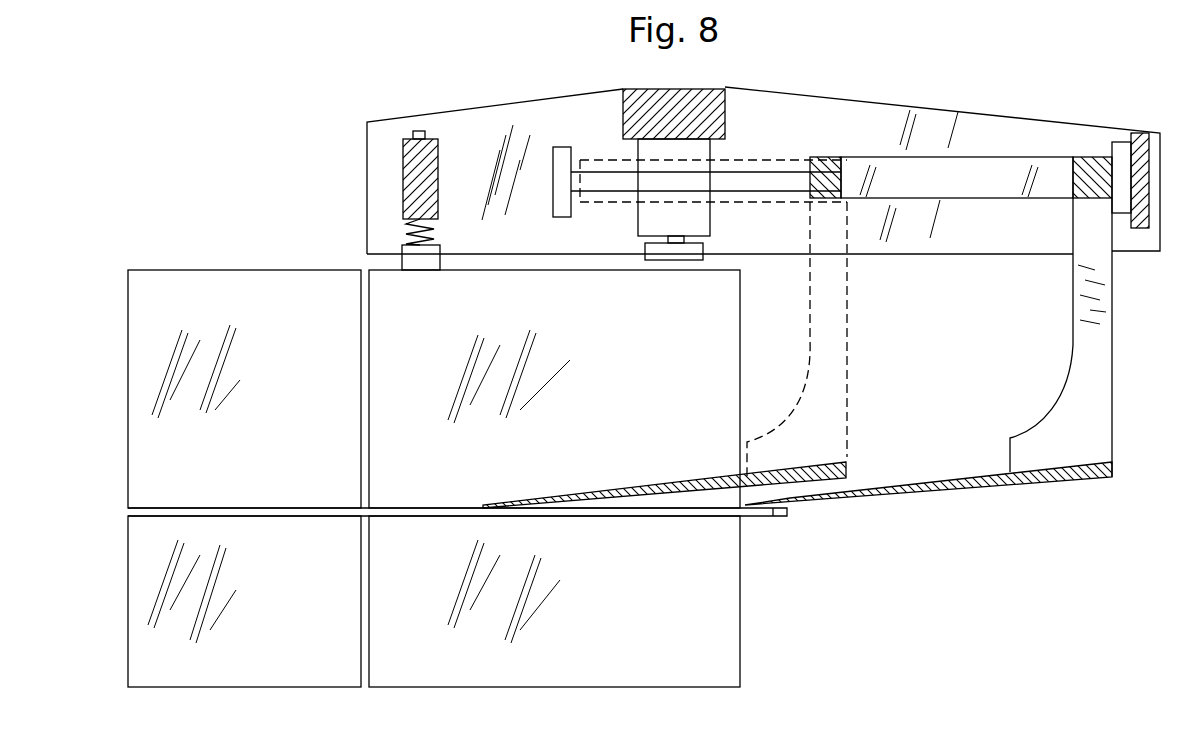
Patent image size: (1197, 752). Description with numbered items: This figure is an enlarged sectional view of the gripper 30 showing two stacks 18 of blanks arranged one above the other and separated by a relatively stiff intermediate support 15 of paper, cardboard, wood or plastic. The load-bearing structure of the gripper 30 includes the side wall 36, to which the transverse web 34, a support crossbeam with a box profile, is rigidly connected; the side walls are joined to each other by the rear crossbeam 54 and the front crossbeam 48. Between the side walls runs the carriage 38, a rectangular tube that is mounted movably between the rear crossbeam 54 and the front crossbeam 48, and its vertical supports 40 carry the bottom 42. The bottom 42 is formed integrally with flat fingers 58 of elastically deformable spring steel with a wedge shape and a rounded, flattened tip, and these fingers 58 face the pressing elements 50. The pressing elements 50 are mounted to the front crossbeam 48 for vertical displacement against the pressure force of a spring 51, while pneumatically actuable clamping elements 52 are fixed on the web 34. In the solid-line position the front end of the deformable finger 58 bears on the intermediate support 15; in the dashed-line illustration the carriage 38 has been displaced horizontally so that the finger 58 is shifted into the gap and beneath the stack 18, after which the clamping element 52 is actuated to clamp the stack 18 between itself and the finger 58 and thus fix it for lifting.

The intermediate support 15 is at (778, 516).
The individual stack 18 is at (728, 360).
The gripper 30 is at (980, 105).
The transverse web 34 is at (652, 105).
The side wall 36 is at (505, 118).
The carriage 38 is at (1090, 152).
The vertical support 40 is at (1112, 305).
The bottom 42 is at (1103, 462).
The front crossbeam 48 is at (403, 165).
The pressing element 50 is at (420, 262).
The spring 51 is at (405, 230).
The clamping element 52 is at (674, 258).
The rear crossbeam 54 is at (1150, 140).
The finger 58 is at (822, 498).